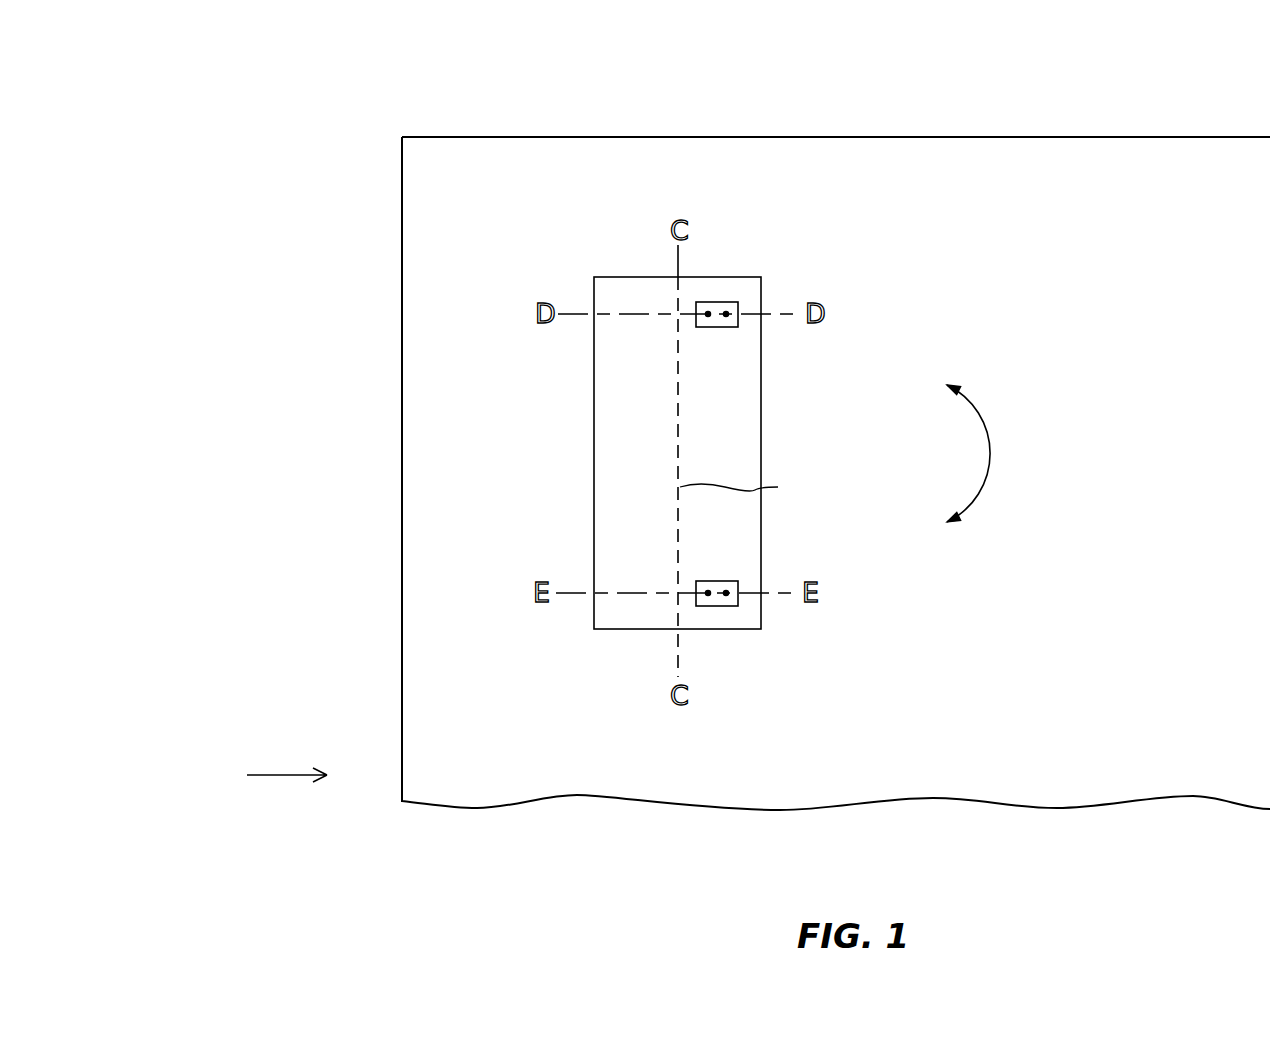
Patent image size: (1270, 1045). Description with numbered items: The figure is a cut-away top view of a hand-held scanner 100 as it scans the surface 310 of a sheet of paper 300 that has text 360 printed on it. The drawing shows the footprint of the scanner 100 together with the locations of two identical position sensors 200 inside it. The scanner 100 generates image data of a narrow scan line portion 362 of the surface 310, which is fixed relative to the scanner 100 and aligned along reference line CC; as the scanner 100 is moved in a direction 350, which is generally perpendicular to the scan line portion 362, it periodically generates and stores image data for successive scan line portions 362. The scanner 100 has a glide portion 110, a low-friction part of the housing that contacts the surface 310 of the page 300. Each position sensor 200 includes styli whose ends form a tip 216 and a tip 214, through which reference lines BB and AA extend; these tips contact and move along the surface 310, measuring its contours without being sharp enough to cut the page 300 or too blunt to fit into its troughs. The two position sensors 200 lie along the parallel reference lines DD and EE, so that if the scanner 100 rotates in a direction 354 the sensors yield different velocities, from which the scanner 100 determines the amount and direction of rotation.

The scanner 100 is at (825, 650).
The glide portion 110 is at (746, 428).
The position sensor 200 is at (721, 297).
The tip 214 is at (709, 317).
The tip 216 is at (738, 310).
The sheet of paper 300 is at (1003, 104).
The surface 310 is at (1127, 272).
The direction 350 is at (288, 779).
The direction 354 is at (990, 453).
The text 360 is at (648, 446).
The scan line portion 362 is at (756, 489).